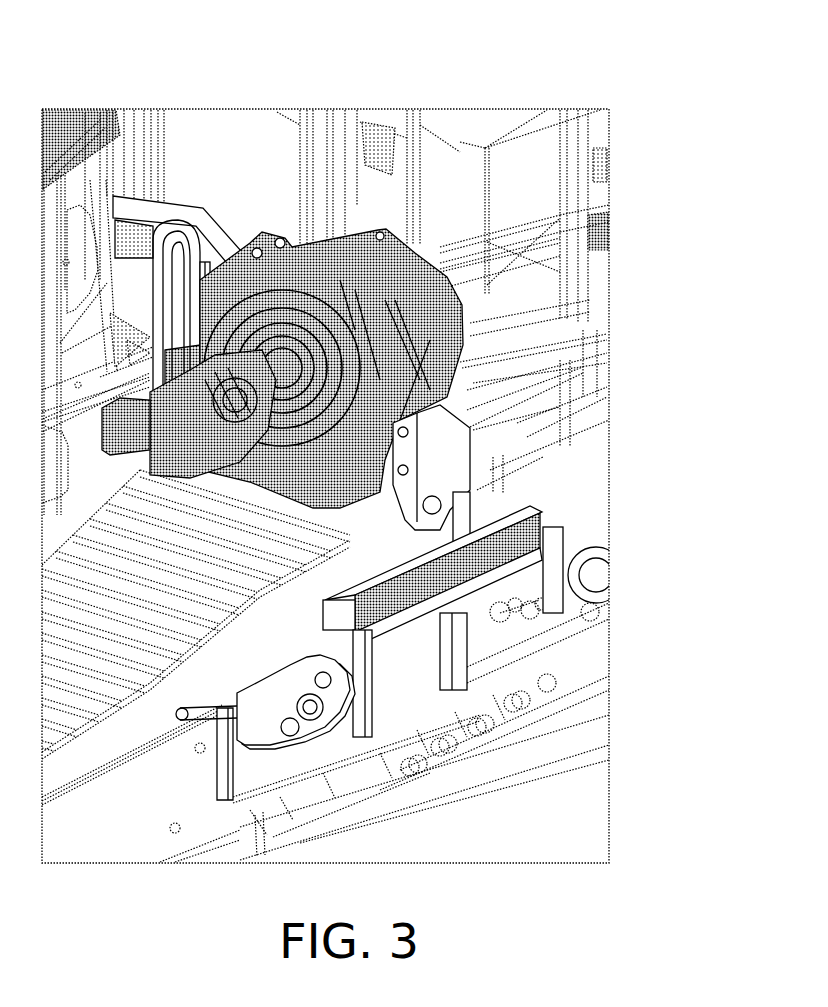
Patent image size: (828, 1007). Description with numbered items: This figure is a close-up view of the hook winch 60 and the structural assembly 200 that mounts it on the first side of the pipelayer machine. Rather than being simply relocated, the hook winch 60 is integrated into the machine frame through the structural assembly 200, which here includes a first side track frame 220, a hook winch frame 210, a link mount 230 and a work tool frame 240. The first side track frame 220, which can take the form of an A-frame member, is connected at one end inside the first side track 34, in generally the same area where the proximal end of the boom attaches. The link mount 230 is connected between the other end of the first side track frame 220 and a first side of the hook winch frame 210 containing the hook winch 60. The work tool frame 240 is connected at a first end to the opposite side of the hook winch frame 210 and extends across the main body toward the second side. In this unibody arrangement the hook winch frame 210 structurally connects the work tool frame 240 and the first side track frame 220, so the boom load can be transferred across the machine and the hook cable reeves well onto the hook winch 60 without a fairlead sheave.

The structural assembly 200 is at (534, 82).
The work tool frame 240 is at (225, 218).
The hook winch frame 210 is at (457, 300).
The hook winch 60 is at (380, 387).
The link mount 230 is at (472, 440).
The first side track frame 220 is at (562, 552).
The first side track 34 is at (407, 703).